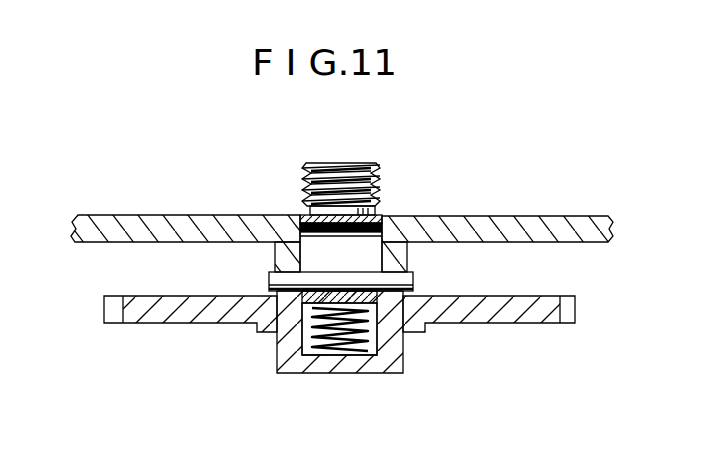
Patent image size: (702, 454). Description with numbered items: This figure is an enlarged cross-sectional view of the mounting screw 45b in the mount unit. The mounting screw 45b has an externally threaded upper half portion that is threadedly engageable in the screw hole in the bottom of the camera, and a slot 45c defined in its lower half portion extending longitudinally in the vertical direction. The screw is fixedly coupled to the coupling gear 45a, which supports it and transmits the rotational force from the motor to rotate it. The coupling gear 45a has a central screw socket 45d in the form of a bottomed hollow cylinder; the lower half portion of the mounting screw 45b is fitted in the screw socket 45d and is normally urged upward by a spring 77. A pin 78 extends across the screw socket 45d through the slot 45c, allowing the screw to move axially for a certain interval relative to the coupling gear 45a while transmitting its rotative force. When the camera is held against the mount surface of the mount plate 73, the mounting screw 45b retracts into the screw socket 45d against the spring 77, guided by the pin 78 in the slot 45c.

The mount plate 73 is at (178, 212).
The coupling gear 45a is at (505, 318).
The mounting screw 45b is at (357, 176).
The slot 45c is at (371, 247).
The screw socket 45d is at (302, 332).
The spring 77 is at (378, 332).
The pin 78 is at (407, 276).